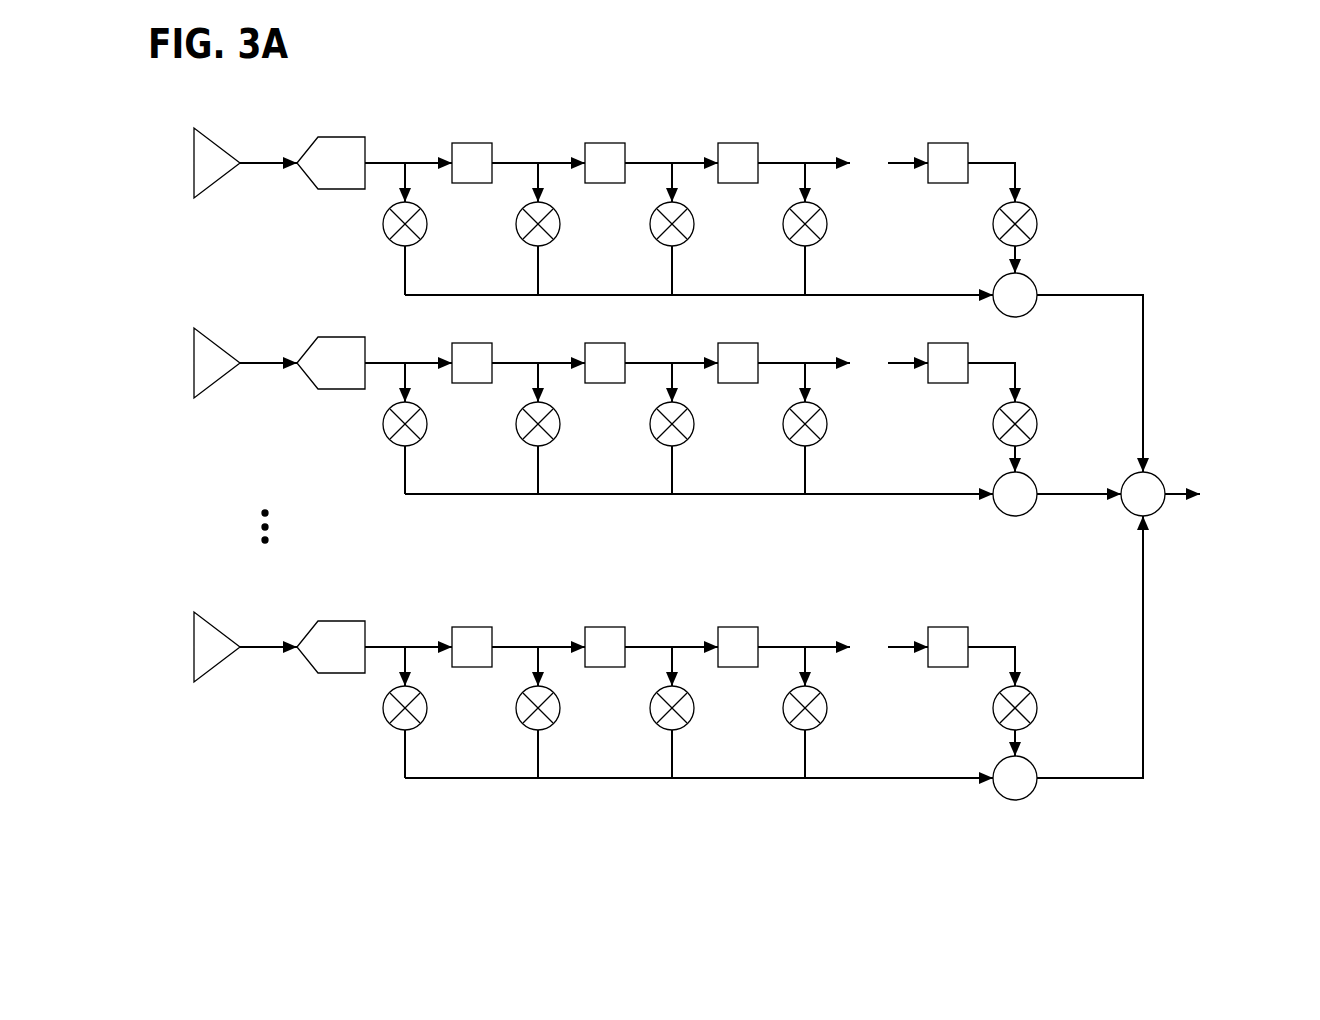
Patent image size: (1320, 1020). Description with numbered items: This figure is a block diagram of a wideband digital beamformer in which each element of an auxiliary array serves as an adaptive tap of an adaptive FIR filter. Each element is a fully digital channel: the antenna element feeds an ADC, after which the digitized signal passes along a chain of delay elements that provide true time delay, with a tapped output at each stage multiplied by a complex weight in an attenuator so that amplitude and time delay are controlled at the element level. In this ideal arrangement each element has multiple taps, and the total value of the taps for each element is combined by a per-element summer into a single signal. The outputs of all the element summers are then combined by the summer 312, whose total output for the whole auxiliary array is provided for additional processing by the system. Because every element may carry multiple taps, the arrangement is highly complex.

The summer 312 is at (1163, 473).